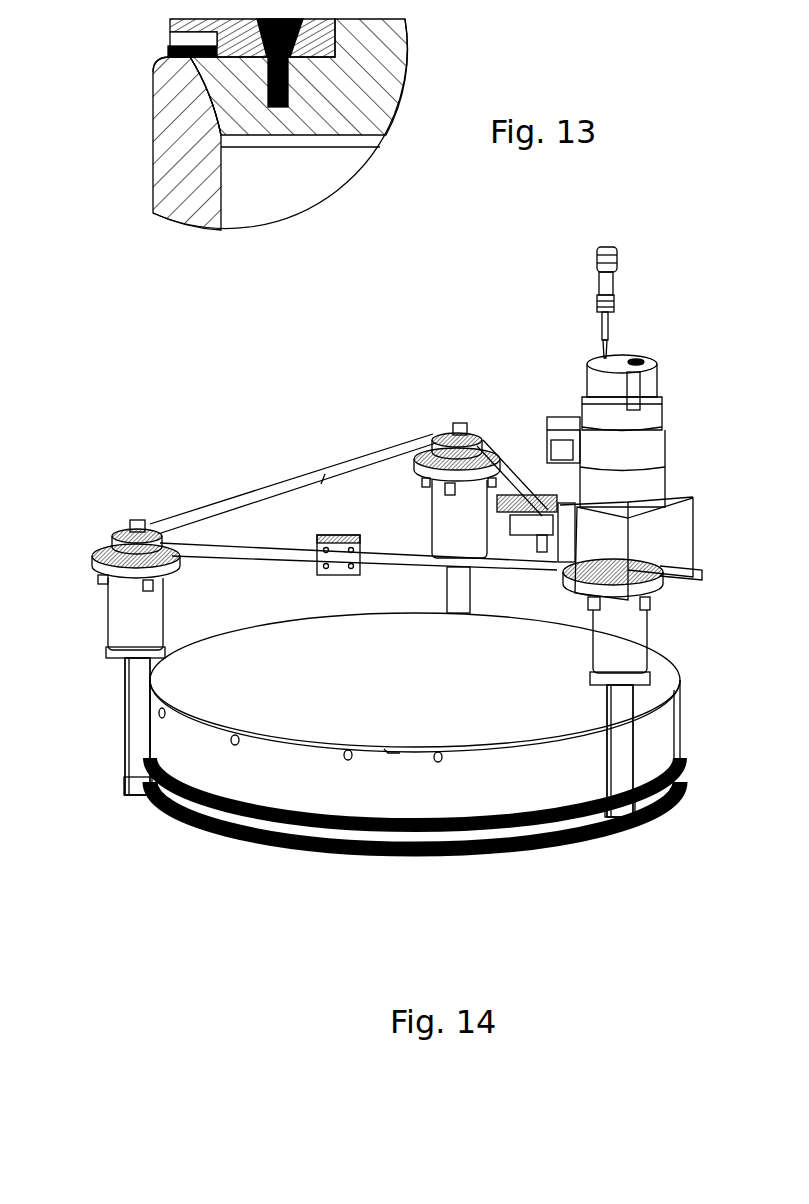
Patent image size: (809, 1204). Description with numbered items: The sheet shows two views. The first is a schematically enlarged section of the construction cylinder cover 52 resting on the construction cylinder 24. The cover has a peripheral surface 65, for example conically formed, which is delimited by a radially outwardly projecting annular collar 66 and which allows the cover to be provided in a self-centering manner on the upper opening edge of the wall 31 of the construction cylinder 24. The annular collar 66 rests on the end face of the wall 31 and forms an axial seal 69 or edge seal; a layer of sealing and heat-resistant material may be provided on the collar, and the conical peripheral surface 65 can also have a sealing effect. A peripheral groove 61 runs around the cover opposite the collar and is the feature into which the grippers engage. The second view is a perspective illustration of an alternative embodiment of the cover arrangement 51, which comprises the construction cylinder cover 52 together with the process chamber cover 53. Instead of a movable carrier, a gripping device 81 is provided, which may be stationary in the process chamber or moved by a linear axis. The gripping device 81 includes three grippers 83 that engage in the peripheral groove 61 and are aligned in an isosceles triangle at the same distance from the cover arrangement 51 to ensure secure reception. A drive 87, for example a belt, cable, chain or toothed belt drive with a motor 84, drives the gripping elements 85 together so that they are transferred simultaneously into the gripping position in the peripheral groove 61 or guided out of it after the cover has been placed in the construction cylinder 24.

In FIG. 13, the construction cylinder 24 is at (297, 197).
In FIG. 13, the wall 31 is at (190, 205).
In FIG. 14, the cover arrangement 51 is at (215, 864).
In FIG. 13, the construction cylinder cover 52 is at (397, 60).
In FIG. 14, the construction cylinder cover 52 is at (305, 852).
In FIG. 14, the process chamber cover 53 is at (488, 797).
In FIG. 13, the peripheral groove 61 is at (172, 38).
In FIG. 14, the peripheral groove 61 is at (577, 838).
In FIG. 13, the peripheral surface 65 is at (206, 102).
In FIG. 13, the annular collar 66 is at (166, 58).
In FIG. 13, the axial seal 69 is at (167, 48).
In FIG. 14, the gripping device 81 is at (531, 380).
In FIG. 14, the grippers 83 is at (101, 628).
In FIG. 14, the motor 84 is at (638, 448).
In FIG. 14, the gripping elements 85 is at (153, 798).
In FIG. 14, the drive 87 is at (388, 434).